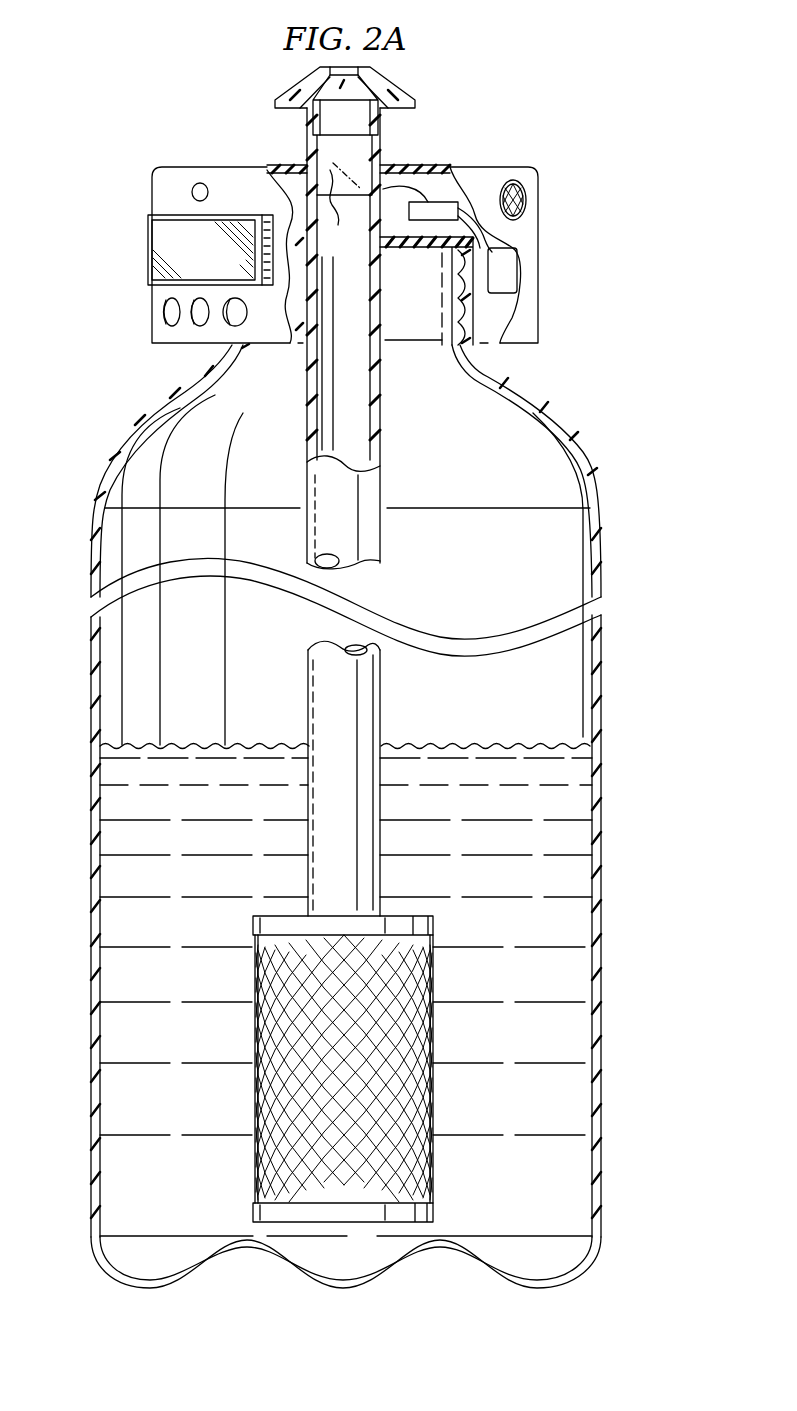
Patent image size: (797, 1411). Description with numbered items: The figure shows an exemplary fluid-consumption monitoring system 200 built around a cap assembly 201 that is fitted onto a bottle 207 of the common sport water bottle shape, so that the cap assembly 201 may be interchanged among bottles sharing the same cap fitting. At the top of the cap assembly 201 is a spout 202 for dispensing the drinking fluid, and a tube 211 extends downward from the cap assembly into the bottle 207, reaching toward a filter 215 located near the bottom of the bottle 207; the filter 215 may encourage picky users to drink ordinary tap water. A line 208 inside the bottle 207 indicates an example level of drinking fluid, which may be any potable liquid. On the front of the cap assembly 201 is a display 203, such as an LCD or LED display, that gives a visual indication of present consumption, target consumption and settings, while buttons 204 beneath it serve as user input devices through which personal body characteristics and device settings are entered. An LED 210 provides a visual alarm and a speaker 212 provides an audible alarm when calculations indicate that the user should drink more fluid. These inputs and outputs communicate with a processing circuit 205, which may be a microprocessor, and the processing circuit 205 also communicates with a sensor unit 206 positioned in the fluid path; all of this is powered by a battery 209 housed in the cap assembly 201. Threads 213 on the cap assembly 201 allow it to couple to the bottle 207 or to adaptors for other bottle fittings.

The system 200 is at (126, 88).
The cap assembly 201 is at (142, 190).
The spout 202 is at (400, 76).
The display 203 is at (160, 235).
The buttons 204 is at (163, 316).
The processing circuit 205 is at (462, 178).
The sensor unit 206 is at (338, 197).
The bottle 207 is at (91, 933).
The line indicating level of drinking fluid 208 is at (475, 745).
The battery 209 is at (517, 268).
The LED 210 is at (193, 183).
The drinking tube 211 is at (380, 418).
The speaker 212 is at (528, 203).
The threads 213 is at (453, 323).
The filter 215 is at (433, 1082).